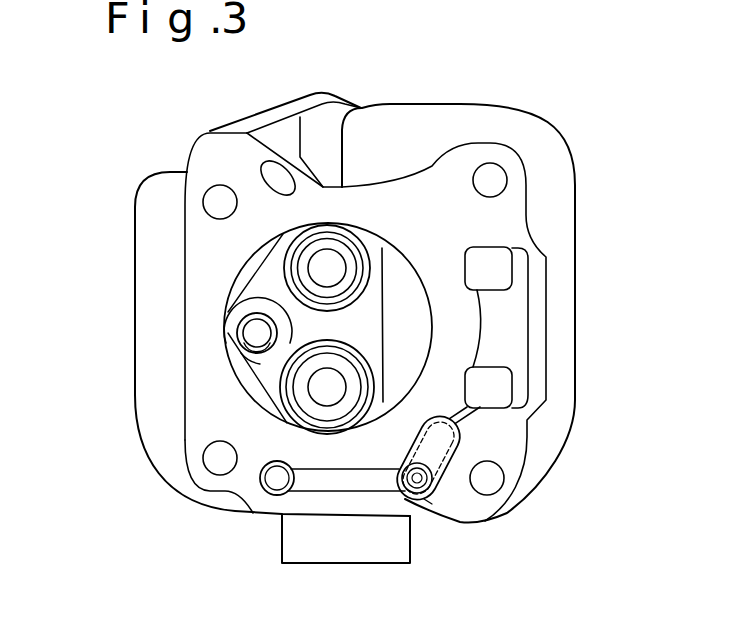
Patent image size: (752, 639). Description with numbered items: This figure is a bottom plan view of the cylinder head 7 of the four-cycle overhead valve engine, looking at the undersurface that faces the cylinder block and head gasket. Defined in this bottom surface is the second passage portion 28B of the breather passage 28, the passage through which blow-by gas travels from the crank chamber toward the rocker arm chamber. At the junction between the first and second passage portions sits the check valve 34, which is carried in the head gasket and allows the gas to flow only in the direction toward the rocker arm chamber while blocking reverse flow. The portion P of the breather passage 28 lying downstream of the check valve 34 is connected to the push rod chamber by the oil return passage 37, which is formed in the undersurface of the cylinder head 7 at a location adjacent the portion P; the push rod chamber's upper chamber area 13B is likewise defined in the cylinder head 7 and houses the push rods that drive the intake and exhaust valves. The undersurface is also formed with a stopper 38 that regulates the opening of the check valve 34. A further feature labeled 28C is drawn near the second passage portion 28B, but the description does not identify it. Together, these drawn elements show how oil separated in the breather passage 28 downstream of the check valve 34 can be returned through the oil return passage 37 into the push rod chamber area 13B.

The cylinder head 7 is at (575, 182).
The upper chamber area 13B is at (508, 342).
The breather passage 28 is at (363, 484).
The second passage portion 28B is at (332, 480).
The bolt boss 28C is at (276, 482).
The check valve 34 is at (437, 457).
The oil return passage 37 is at (477, 420).
The stopper 38 is at (420, 481).
The portion of the breather passage P is at (428, 502).